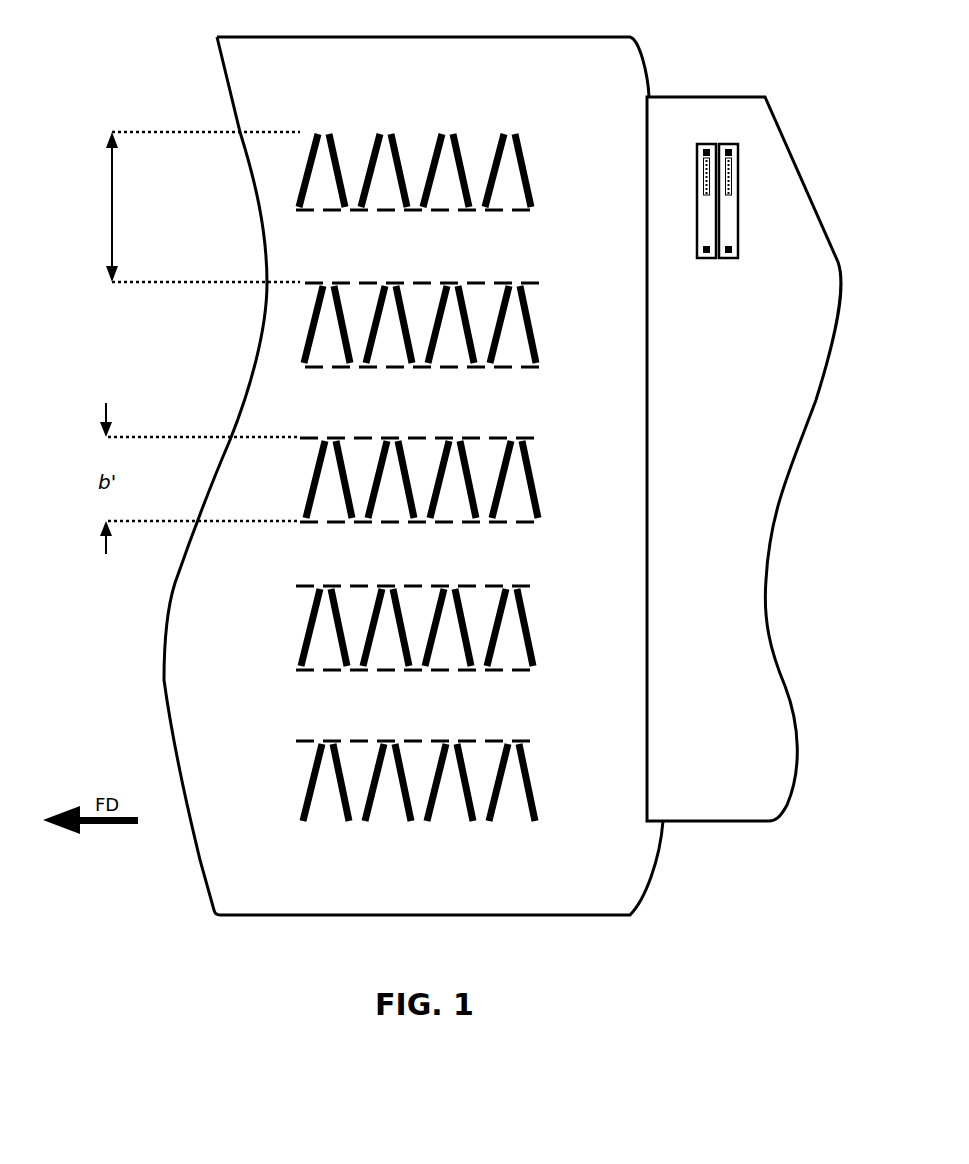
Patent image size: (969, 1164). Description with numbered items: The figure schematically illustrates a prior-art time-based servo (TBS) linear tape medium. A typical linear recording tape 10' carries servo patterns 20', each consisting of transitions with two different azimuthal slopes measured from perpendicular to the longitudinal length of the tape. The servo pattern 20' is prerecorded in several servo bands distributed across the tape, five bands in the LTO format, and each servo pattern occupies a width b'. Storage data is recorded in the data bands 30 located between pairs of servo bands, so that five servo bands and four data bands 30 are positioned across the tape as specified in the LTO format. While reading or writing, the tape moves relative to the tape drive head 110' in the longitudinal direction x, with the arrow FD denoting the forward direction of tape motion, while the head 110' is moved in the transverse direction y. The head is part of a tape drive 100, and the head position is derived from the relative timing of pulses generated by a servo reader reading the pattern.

The linear recording tape 10' is at (447, 476).
The servo pattern 20' is at (468, 473).
The data band 30 is at (440, 253).
The tape drive 100 is at (736, 437).
The tape drive head 110' is at (745, 201).